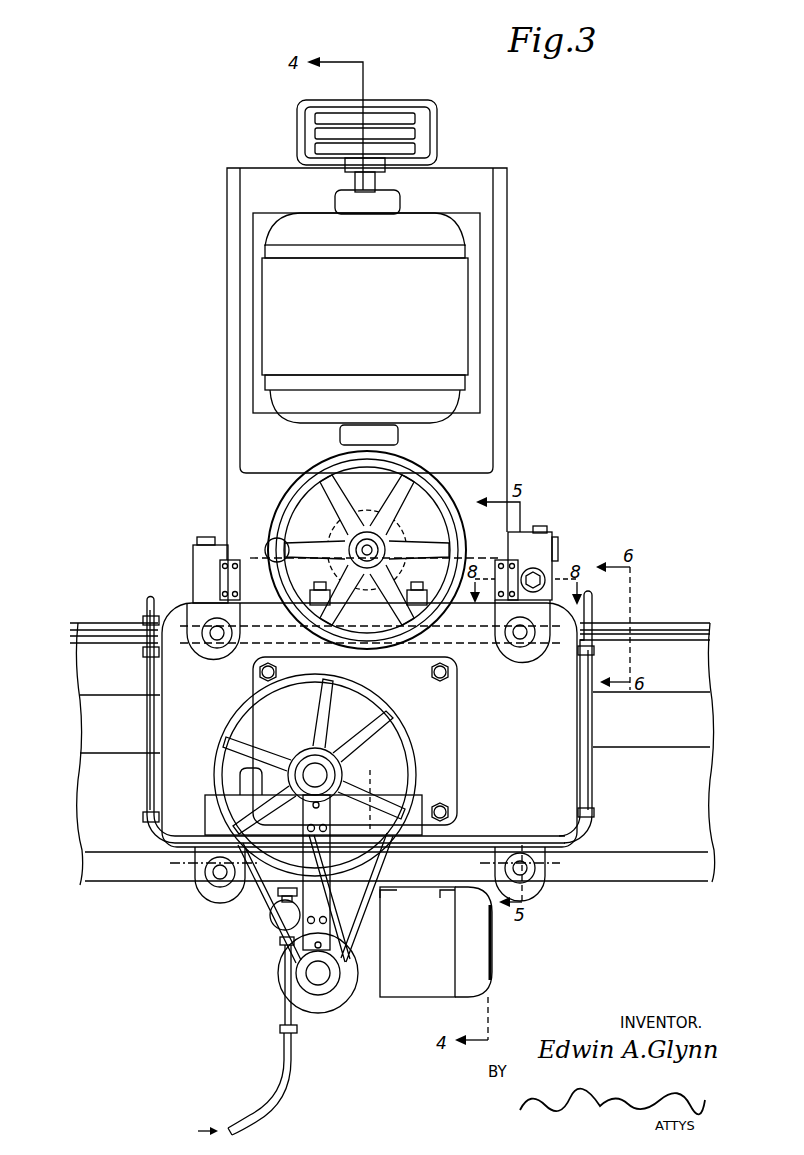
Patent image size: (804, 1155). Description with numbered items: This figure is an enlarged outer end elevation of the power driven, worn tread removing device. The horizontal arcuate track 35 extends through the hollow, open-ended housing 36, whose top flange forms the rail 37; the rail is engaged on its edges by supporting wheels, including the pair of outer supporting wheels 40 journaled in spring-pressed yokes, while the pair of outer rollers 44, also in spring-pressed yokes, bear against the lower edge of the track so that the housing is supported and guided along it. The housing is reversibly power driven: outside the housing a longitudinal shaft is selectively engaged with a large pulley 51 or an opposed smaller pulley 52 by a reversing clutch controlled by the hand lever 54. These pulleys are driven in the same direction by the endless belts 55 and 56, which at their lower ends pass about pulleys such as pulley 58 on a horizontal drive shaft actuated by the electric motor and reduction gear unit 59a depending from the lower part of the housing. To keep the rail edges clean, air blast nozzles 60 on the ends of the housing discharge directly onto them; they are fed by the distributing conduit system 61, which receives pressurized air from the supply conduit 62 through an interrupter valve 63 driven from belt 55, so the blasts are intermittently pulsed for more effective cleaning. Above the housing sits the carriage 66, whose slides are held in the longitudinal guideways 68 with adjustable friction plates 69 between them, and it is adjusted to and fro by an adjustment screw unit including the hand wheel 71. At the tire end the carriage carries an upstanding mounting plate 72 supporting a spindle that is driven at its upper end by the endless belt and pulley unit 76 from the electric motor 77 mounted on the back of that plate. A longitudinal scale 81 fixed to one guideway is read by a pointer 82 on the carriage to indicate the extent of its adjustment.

The track 35 is at (92, 775).
The housing 36 is at (560, 787).
The rail 37 is at (95, 638).
The outer supporting wheels 40 is at (192, 650).
The outer rollers 44 is at (192, 872).
The large pulley 51 is at (400, 738).
The smaller pulley 52 is at (318, 760).
The hand lever 54 is at (272, 797).
The endless belt 55 is at (373, 898).
The endless belt 56 is at (340, 915).
The pulley 58 is at (348, 975).
The electric motor and reduction gear unit 59a is at (472, 967).
The air blast nozzles 60 is at (145, 622).
The distributing conduit system 61 is at (150, 722).
The supply conduit 62 is at (285, 1012).
The interrupter valve 63 is at (282, 917).
The carriage 66 is at (500, 384).
The guideways 68 is at (203, 575).
The friction plates 69 is at (522, 646).
The hand wheel 71 is at (418, 478).
The mounting plate 72 is at (482, 194).
The endless belt and pulley unit 76 is at (418, 137).
The electric motor 77 is at (455, 320).
The scale 81 is at (558, 578).
The pointer 82 is at (556, 560).